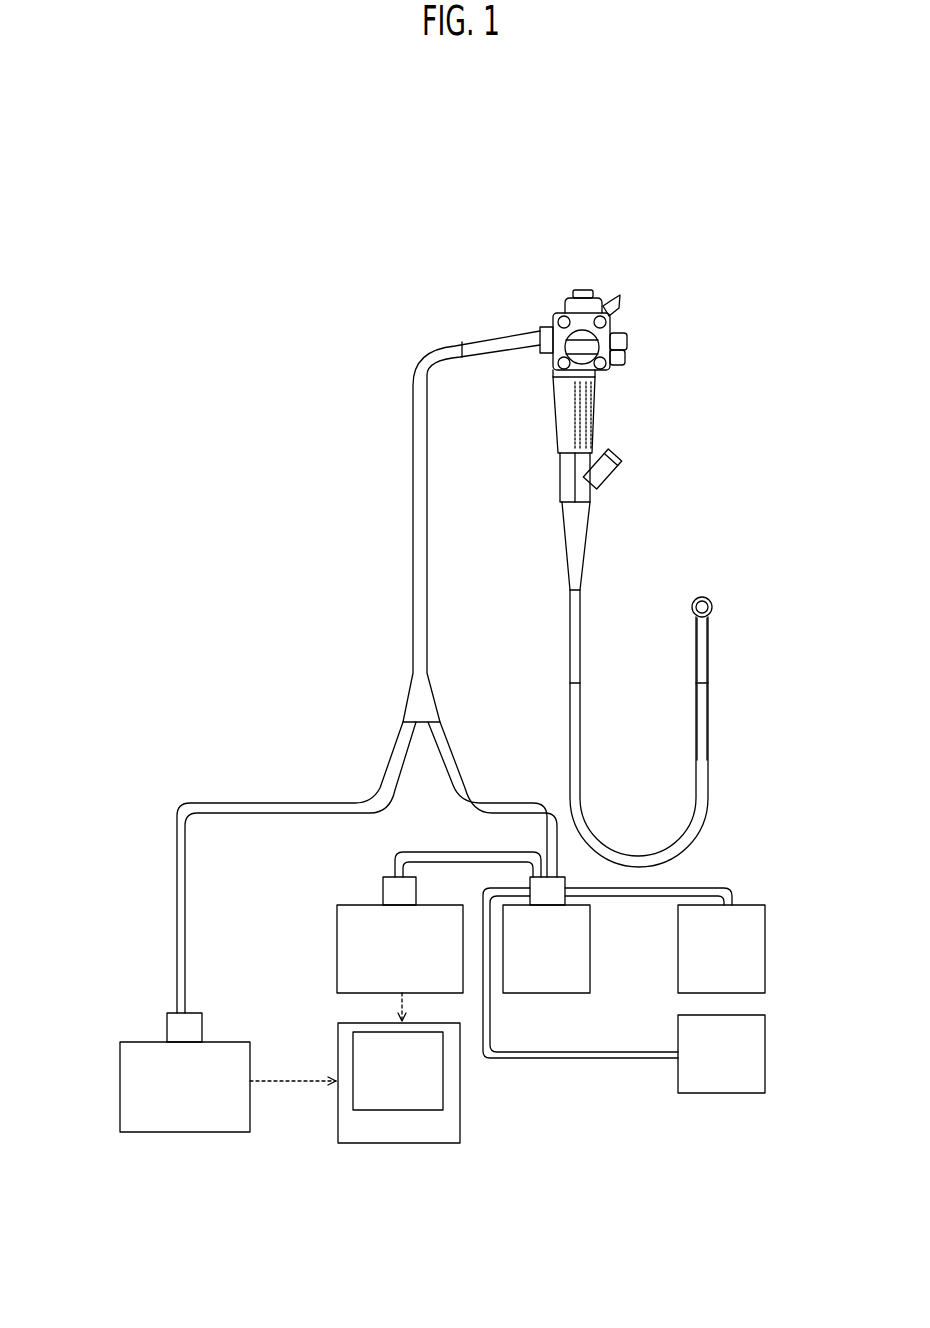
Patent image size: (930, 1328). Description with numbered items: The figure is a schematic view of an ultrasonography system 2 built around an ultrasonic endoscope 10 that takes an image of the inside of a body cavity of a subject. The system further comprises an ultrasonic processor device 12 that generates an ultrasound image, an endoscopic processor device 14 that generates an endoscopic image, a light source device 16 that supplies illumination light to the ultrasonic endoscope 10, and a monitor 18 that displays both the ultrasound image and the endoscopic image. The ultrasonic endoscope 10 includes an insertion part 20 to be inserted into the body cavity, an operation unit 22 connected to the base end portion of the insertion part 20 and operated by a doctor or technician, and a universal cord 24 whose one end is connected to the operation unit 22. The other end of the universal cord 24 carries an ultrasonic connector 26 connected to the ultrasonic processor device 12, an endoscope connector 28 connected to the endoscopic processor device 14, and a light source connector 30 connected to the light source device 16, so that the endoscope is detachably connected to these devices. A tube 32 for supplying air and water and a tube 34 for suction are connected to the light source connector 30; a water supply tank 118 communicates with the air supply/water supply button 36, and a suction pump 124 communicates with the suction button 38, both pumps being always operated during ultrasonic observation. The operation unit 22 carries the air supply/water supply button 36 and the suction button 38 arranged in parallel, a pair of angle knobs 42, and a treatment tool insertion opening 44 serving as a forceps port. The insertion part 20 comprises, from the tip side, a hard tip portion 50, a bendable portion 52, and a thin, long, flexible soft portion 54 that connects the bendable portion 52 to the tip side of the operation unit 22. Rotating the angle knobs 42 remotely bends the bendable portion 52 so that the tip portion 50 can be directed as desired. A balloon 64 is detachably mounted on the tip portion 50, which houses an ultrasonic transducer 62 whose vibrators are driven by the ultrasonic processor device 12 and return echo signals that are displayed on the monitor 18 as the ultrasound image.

The ultrasonography system 2 is at (457, 207).
The ultrasonic endoscope 10 is at (318, 448).
The ultrasonic processor device 12 is at (220, 1133).
The endoscopic processor device 14 is at (337, 942).
The light source device 16 is at (590, 950).
The monitor 18 is at (460, 1081).
The insertion part 20 is at (618, 834).
The operation unit 22 is at (543, 468).
The universal cord 24 is at (426, 352).
The ultrasonic connector 26 is at (203, 1027).
The endoscope connector 28 is at (417, 893).
The light source connector 30 is at (567, 888).
The tube for supplying air and water 32 is at (712, 888).
The tube for suction 34 is at (603, 1052).
The air supply/water supply button 36 is at (627, 362).
The suction button 38 is at (629, 341).
The angle knob 42 is at (614, 315).
The treatment tool insertion opening 44 is at (590, 488).
The tip portion 50 is at (687, 624).
The bendable portion 52 is at (709, 656).
The soft portion 54 is at (709, 768).
The ultrasonic transducer 62 is at (702, 595).
The balloon 64 is at (713, 607).
The water supply tank 118 is at (765, 950).
The suction pump 124 is at (765, 1055).